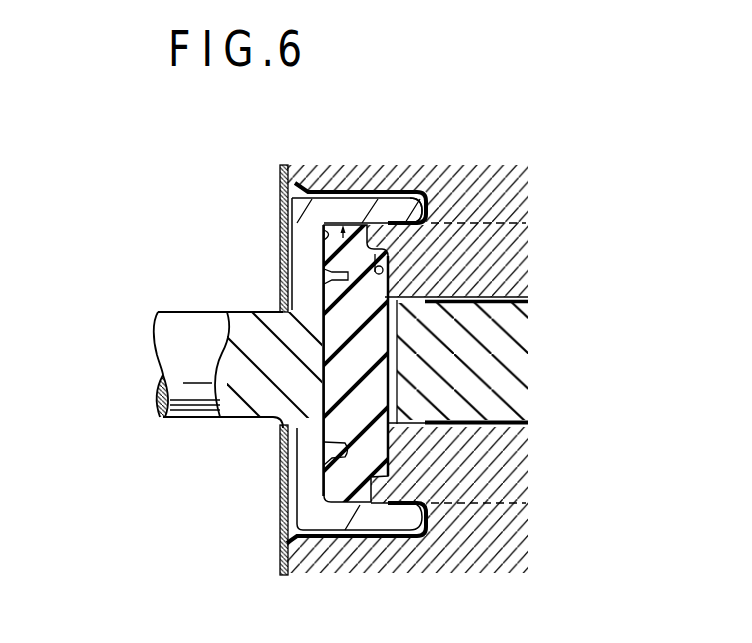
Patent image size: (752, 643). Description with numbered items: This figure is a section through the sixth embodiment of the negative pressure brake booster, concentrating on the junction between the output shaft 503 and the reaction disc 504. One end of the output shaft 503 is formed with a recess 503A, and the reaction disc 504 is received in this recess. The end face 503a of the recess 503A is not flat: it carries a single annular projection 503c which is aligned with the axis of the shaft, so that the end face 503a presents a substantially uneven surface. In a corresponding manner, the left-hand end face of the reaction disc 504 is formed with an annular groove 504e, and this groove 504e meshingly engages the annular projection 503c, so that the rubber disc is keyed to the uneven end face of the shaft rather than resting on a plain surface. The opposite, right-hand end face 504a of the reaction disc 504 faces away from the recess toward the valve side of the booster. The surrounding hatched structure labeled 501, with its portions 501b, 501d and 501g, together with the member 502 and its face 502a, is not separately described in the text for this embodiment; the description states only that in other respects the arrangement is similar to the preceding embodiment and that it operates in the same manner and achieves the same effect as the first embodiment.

The housing 501 is at (505, 480).
The lower bore portion of housing 501b is at (400, 462).
The upper bore portion of housing 501d is at (368, 224).
The annular groove 501g is at (432, 222).
The bearing ring member 502 is at (497, 352).
The end face of ring member 502a is at (396, 398).
The output shaft 503 is at (184, 329).
The end face of recess 503a is at (280, 212).
The annular projection 503c is at (322, 260).
The recess 503A is at (506, 226).
The reaction disc 504 is at (345, 398).
The outer peripheral portion of seal 504a is at (392, 350).
The annular groove 504e is at (332, 276).